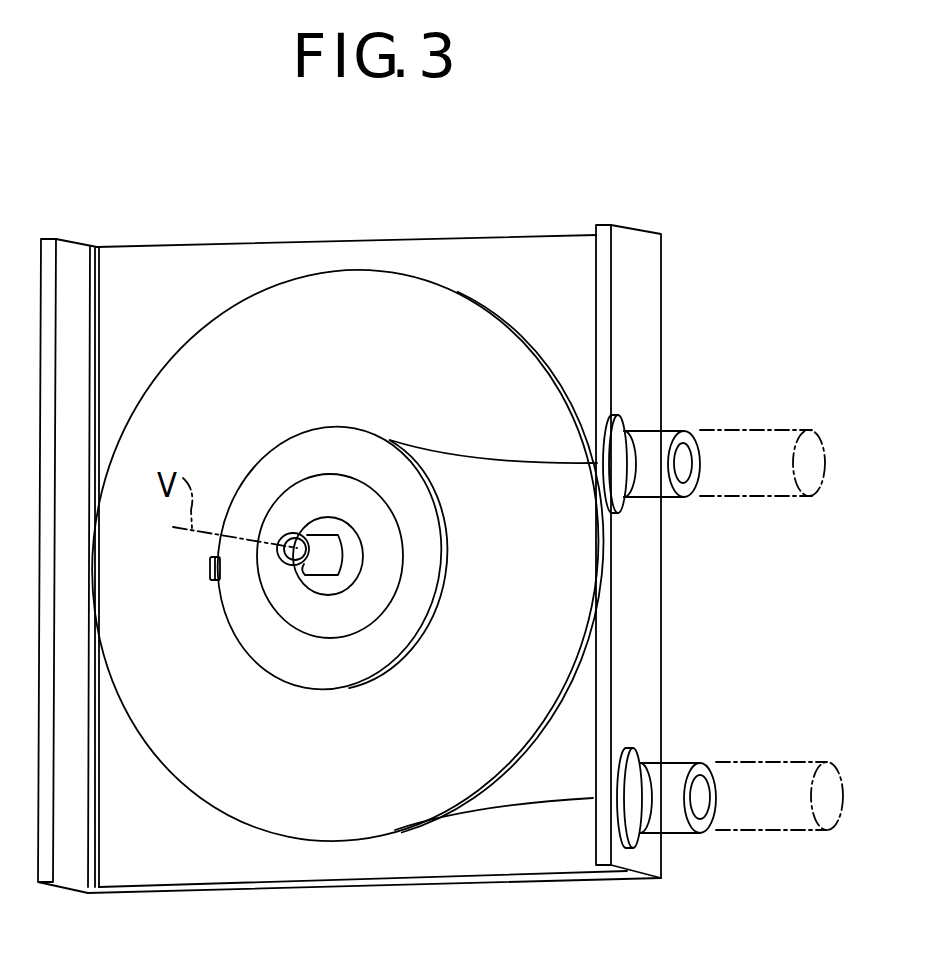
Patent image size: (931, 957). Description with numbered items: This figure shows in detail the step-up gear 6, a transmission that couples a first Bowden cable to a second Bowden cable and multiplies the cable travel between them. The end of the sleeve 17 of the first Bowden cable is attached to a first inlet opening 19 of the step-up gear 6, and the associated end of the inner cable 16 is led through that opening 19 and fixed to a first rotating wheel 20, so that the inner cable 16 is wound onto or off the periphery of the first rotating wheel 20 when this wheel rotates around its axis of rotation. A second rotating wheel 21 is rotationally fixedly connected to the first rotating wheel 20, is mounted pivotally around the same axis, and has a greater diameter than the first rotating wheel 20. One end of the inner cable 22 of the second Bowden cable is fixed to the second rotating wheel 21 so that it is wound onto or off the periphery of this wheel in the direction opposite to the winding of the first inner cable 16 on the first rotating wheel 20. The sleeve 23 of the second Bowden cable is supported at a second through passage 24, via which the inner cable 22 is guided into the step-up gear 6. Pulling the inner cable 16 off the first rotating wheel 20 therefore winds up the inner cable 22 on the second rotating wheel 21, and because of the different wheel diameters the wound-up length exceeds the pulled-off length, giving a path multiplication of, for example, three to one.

The step-up gear 6 is at (503, 210).
The second rotating wheel 21 is at (296, 300).
The first rotating wheel 20 is at (367, 652).
The inner cable 16 is at (512, 462).
The inner cable 22 is at (523, 808).
The first inlet opening 19 is at (683, 460).
The sleeve 17 is at (773, 441).
The second through passage 24 is at (699, 800).
The sleeve 23 is at (783, 774).